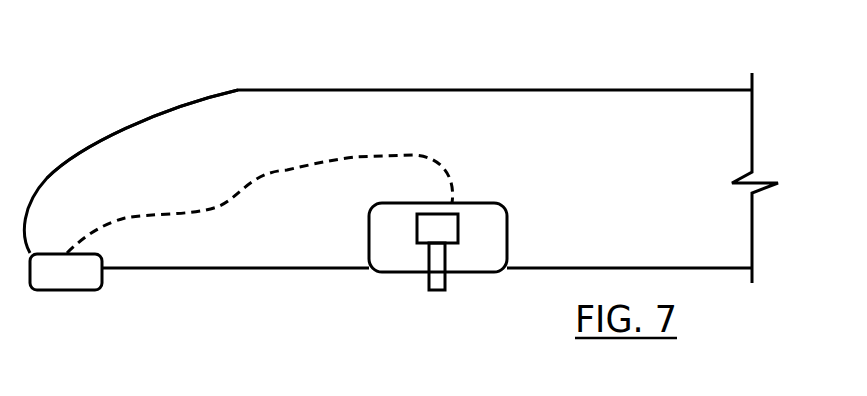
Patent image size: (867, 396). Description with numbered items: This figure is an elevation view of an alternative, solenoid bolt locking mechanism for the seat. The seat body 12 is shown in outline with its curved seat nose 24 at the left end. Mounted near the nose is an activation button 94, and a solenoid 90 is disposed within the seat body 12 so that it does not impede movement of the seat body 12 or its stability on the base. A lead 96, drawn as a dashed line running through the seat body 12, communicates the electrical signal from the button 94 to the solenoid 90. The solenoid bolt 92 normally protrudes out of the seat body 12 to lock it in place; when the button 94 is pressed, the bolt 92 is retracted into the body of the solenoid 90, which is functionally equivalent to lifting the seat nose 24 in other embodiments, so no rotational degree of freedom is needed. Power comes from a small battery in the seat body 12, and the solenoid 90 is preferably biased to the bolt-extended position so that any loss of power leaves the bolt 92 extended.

The seat body 12 is at (660, 90).
The seat nose 24 is at (72, 160).
The solenoid 90 is at (508, 242).
The solenoid bolt 92 is at (427, 277).
The activation button 94 is at (80, 290).
The lead 96 is at (352, 157).